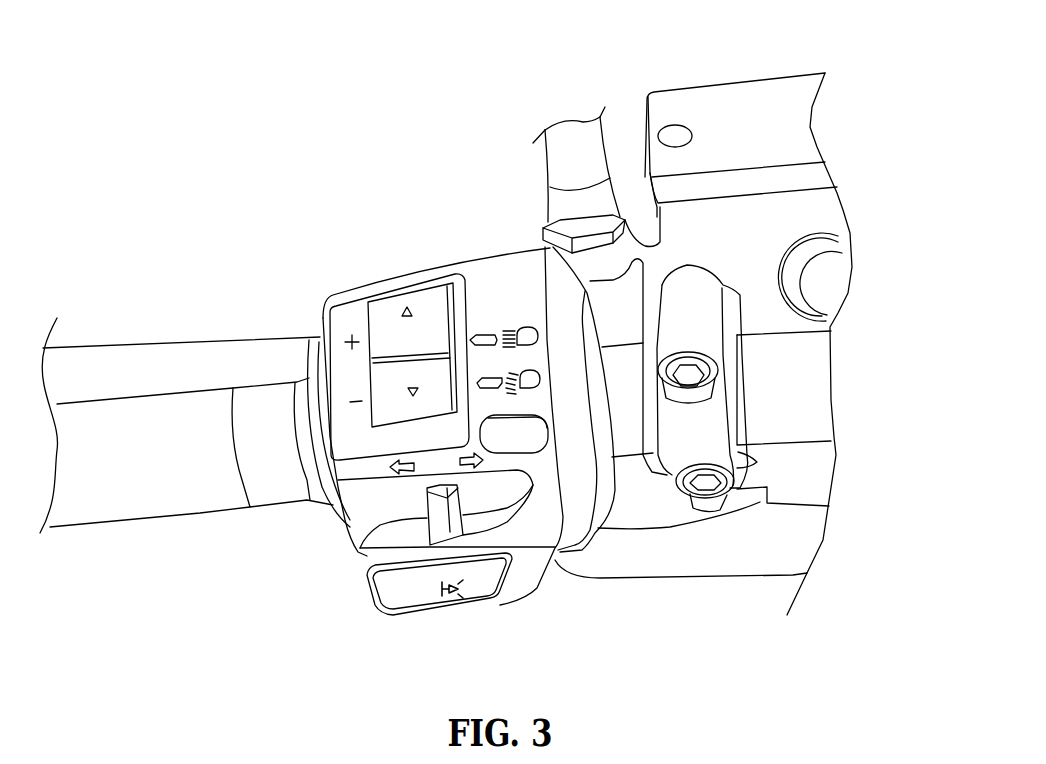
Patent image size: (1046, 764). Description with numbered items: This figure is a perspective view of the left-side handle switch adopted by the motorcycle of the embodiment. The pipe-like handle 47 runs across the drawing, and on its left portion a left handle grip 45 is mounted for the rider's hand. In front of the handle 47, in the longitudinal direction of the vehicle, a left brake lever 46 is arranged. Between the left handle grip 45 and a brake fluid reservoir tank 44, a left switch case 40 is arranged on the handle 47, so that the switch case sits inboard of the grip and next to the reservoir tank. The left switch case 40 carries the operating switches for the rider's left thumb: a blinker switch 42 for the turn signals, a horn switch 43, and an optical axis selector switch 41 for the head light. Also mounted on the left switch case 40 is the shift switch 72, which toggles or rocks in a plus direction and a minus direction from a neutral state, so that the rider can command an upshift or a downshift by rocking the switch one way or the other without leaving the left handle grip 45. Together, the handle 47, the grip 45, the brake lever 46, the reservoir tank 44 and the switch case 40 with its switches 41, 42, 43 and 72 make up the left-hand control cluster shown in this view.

The left switch case 40 is at (476, 248).
The optical axis selector switch 41 is at (533, 443).
The blinker switch 42 is at (433, 517).
The horn switch 43 is at (410, 602).
The brake fluid reservoir tank 44 is at (722, 97).
The left handle grip 45 is at (163, 493).
The left brake lever 46 is at (145, 357).
The handle 47 is at (797, 391).
The shift switch 72 is at (383, 315).